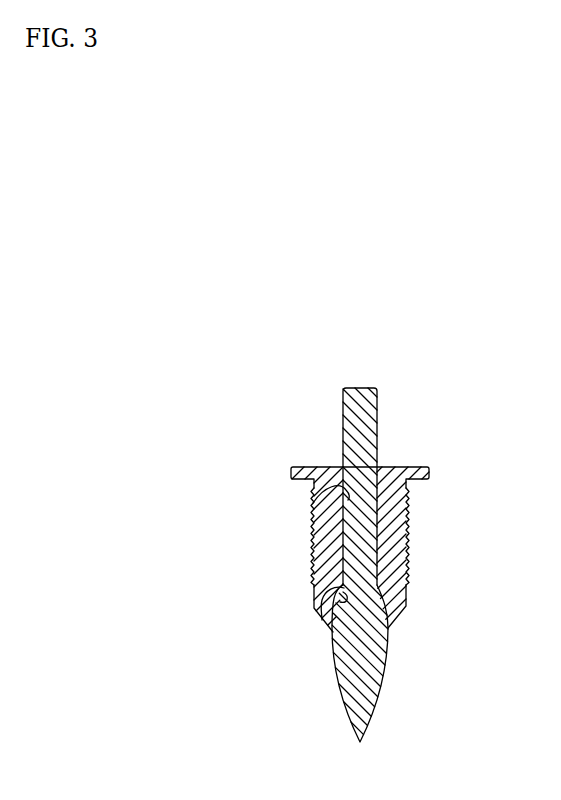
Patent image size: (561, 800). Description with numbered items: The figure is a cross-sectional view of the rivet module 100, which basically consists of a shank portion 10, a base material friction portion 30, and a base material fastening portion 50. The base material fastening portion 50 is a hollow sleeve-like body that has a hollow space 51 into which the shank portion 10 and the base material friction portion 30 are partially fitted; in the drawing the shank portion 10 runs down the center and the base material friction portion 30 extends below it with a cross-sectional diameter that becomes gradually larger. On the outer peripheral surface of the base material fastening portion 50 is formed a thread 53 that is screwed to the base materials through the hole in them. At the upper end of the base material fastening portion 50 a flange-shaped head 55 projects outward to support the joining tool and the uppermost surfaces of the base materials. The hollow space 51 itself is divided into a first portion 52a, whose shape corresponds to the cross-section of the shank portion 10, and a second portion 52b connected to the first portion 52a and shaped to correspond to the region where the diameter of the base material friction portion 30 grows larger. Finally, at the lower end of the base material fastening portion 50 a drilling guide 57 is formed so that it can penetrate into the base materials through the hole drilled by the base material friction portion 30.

The rivet module 100 is at (382, 268).
The shank portion 10 is at (378, 418).
The base material friction portion 30 is at (388, 673).
The base material fastening portion 50 is at (350, 553).
The flange-shaped head 55 is at (425, 467).
The thread 53 is at (410, 552).
The hollow space 51 is at (291, 557).
The first portion 52a is at (313, 505).
The second portion 52b is at (309, 608).
The drilling guide 57 is at (322, 620).